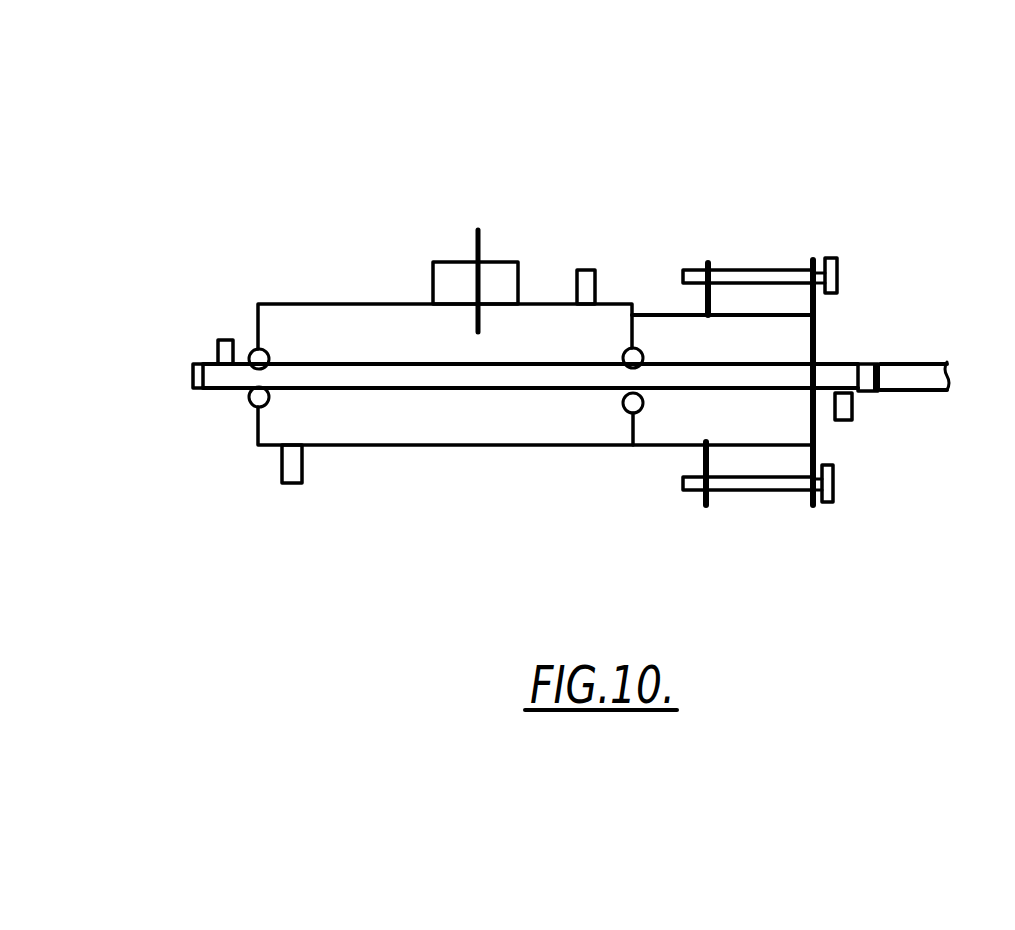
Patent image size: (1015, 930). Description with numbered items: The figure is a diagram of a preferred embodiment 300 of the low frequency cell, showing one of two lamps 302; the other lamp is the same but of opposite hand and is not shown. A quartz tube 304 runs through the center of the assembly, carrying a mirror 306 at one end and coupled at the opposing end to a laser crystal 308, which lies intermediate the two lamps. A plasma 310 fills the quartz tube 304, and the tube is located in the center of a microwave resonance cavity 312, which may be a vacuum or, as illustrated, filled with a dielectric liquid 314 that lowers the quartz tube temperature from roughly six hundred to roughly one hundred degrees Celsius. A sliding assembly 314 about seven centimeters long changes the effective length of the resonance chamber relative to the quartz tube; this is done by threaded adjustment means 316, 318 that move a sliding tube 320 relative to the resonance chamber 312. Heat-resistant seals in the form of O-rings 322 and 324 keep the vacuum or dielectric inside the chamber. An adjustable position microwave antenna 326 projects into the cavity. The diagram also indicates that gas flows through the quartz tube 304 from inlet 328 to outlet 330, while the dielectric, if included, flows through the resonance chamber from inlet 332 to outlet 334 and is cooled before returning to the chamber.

The low frequency cell embodiment 300 is at (722, 124).
The lamp 302 is at (545, 458).
The quartz tube 304 is at (233, 388).
The mirror 306 is at (193, 388).
The laser crystal 308 is at (872, 415).
The plasma 310 is at (408, 377).
The microwave resonance cavity 312 is at (387, 450).
The dielectric liquid / sliding assembly 314 is at (350, 325).
The threaded adjustment means 316 is at (837, 273).
The threaded adjustment means 318 is at (785, 493).
The sliding tube 320 is at (773, 312).
The O-ring 322 is at (650, 312).
The O-ring 324 is at (633, 347).
The adjustable position microwave antenna 326 is at (480, 230).
The gas inlet 328 is at (226, 330).
The gas outlet 330 is at (843, 420).
The dielectric inlet 332 is at (588, 260).
The dielectric outlet 334 is at (290, 493).